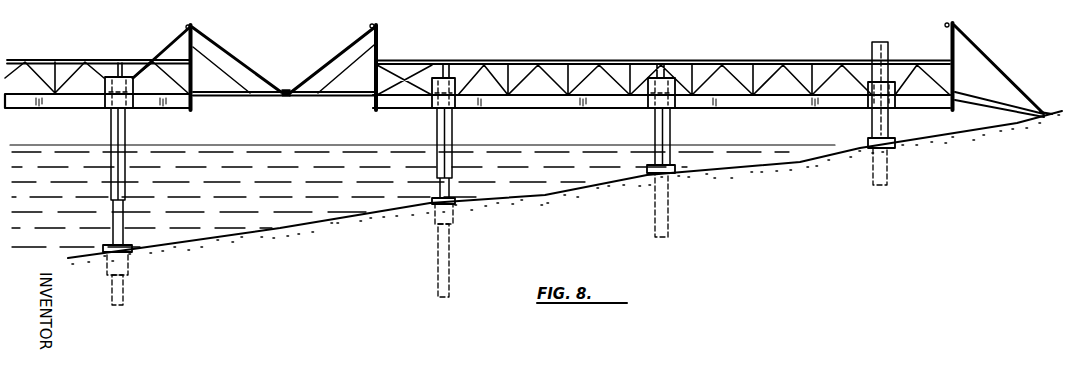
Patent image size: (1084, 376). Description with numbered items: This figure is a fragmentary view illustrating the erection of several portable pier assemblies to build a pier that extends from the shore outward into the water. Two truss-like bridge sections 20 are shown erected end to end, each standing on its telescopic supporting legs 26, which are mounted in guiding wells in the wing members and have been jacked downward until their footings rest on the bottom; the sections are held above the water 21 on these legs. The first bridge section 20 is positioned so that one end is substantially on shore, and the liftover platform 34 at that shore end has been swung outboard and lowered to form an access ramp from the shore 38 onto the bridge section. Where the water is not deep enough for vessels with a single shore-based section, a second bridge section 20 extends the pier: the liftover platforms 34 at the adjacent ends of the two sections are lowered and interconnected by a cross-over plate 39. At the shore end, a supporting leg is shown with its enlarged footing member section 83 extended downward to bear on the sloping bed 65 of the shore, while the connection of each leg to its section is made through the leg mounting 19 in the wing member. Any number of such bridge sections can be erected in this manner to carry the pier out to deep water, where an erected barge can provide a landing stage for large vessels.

The pier cap 19 is at (132, 77).
The bridge section 20 is at (63, 62).
The water 21 is at (541, 153).
The telescopic supporting leg 26 is at (123, 131).
The liftover platform 34 is at (248, 97).
The bank abutment 38 is at (1053, 112).
The cross-over plate 39 is at (283, 88).
The river bed 65 is at (727, 168).
The footing member section 83 is at (897, 143).